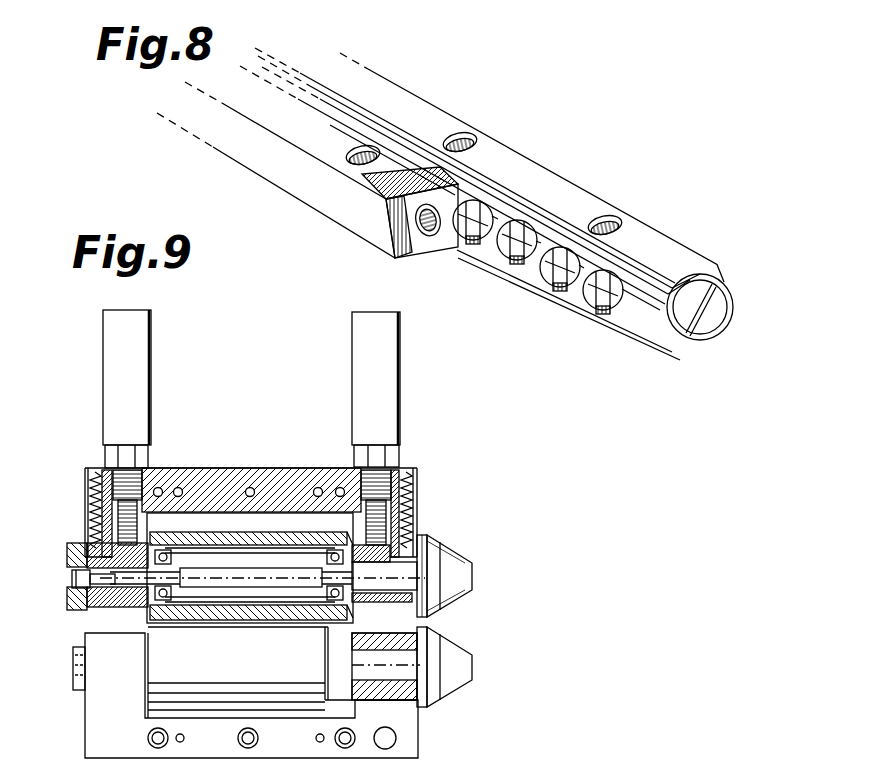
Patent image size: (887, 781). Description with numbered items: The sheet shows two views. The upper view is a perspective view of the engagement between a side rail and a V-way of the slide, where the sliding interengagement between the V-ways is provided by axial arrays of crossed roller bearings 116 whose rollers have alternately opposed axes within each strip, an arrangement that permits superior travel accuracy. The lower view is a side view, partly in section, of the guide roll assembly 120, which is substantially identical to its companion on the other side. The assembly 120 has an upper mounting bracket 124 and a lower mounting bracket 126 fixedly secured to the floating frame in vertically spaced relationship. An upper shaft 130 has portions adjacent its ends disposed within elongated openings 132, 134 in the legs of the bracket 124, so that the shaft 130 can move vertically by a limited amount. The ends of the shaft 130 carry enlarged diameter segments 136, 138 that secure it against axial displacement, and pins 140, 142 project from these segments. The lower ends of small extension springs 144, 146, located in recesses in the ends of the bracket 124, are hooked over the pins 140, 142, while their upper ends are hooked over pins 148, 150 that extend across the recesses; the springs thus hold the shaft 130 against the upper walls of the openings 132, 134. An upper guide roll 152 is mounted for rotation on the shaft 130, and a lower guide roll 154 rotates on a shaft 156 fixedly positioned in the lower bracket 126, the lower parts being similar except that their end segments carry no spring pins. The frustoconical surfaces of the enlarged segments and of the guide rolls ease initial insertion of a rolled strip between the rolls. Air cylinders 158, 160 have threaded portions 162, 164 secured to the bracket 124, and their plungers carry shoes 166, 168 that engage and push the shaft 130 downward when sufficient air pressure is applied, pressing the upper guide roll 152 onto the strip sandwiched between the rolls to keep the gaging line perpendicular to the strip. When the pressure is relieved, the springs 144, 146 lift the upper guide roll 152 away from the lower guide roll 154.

In FIG. 8, the crossed roller bearings 116 is at (508, 235).
In FIG. 9, the guide roll assembly 120 is at (540, 550).
In FIG. 9, the mounting bracket 124 is at (210, 490).
In FIG. 9, the mounting bracket 126 is at (100, 718).
In FIG. 9, the upper shaft 130 is at (405, 572).
In FIG. 9, the elongated opening 132 is at (110, 605).
In FIG. 9, the elongated opening 134 is at (400, 590).
In FIG. 9, the enlarged diameter segment 136 is at (78, 545).
In FIG. 9, the enlarged diameter segment 138 is at (440, 560).
In FIG. 9, the pin 140 is at (86, 555).
In FIG. 9, the pin 142 is at (430, 538).
In FIG. 9, the extension spring 144 is at (86, 493).
In FIG. 9, the extension spring 146 is at (415, 498).
In FIG. 9, the pin 148 is at (98, 480).
In FIG. 9, the pin 150 is at (413, 468).
In FIG. 9, the upper guide roll 152 is at (262, 536).
In FIG. 9, the lower guide roll 154 is at (265, 682).
In FIG. 9, the shaft 156 is at (402, 663).
In FIG. 9, the air cylinder 158 is at (115, 352).
In FIG. 9, the air cylinder 160 is at (382, 359).
In FIG. 9, the threaded portion 162 is at (134, 482).
In FIG. 9, the threaded portion 164 is at (370, 485).
In FIG. 9, the shoe 166 is at (108, 582).
In FIG. 9, the shoe 168 is at (345, 529).